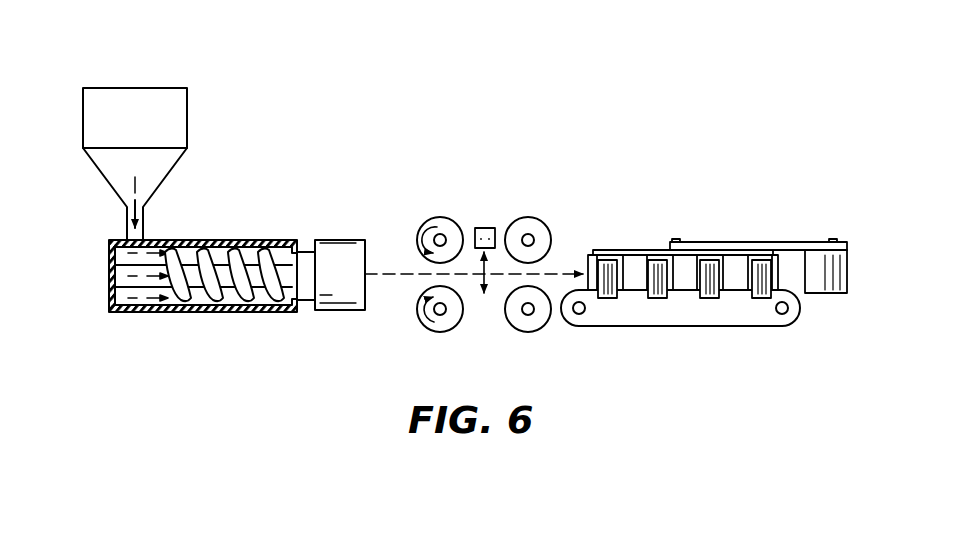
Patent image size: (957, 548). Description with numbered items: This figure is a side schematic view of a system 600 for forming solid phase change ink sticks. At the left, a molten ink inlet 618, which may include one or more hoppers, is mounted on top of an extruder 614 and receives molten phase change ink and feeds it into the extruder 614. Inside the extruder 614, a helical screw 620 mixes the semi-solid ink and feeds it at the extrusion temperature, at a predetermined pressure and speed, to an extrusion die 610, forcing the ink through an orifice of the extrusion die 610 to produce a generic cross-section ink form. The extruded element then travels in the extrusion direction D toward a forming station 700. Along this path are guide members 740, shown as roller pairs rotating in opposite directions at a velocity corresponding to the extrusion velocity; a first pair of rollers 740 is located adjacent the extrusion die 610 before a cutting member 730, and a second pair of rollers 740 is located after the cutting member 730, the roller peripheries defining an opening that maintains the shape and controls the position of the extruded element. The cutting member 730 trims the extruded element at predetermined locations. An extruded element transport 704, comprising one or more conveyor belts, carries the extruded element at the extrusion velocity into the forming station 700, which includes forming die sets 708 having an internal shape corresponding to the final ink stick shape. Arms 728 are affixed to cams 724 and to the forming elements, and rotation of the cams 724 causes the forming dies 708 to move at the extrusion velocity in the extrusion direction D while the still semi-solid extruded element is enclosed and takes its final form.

The system 600 is at (322, 24).
The molten ink inlet 618 is at (188, 115).
The extruder 614 is at (238, 243).
The screw 620 is at (227, 257).
The extrusion die 610 is at (323, 242).
The cutting member 730 is at (483, 223).
The guide members 740 is at (528, 327).
The forming station 700 is at (858, 135).
The extruded element transport 704 is at (637, 332).
The forming die sets 708 is at (753, 250).
The arms 728 is at (788, 240).
The cams 724 is at (825, 297).
The extrusion direction D is at (417, 277).